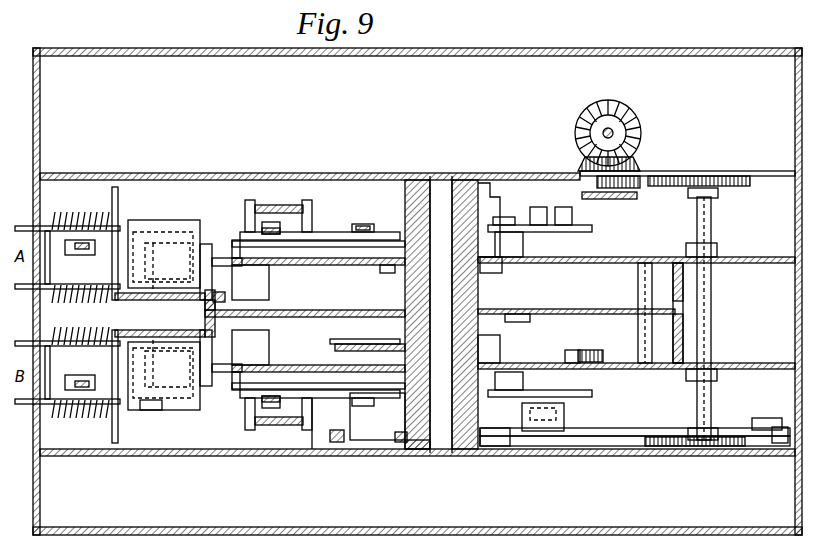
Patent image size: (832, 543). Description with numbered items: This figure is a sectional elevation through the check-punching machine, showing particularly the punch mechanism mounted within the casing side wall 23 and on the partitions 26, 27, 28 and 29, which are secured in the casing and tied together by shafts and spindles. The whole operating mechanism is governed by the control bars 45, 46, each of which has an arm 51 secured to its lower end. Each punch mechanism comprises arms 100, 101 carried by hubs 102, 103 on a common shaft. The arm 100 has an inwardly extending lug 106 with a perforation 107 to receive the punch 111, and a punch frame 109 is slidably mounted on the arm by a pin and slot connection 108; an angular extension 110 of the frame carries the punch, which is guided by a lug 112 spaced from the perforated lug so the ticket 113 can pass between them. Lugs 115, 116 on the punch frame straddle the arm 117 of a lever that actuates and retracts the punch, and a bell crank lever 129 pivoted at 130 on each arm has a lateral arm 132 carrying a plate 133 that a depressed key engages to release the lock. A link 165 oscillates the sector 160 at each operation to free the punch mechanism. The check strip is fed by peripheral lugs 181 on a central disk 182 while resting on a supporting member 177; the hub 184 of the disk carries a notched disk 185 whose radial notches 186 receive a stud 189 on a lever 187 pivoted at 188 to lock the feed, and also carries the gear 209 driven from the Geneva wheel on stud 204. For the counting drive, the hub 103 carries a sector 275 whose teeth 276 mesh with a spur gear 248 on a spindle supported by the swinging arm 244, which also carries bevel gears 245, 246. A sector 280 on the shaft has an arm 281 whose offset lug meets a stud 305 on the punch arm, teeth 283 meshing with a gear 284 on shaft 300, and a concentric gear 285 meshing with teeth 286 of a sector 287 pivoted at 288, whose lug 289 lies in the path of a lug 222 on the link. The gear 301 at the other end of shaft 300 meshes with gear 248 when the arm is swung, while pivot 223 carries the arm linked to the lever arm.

The side wall 23 is at (700, 48).
The partition 26 is at (255, 173).
The partition 27 is at (630, 257).
The partition 28 is at (745, 363).
The partition 29 is at (132, 457).
The control bar 45 is at (100, 392).
The control bar 46 is at (100, 240).
The arm 51 is at (70, 222).
The arm 100 is at (272, 425).
The arm 101 is at (300, 244).
The hub 102 is at (373, 419).
The hub 103 is at (480, 206).
The lug 106 is at (269, 282).
The perforation 107 is at (216, 256).
The pin and slot connection 108 is at (378, 238).
The punch frame 109 is at (340, 240).
The angular extension 110 is at (148, 410).
The punch 111 is at (150, 248).
The lug 112 is at (168, 248).
The ticket 113 is at (204, 312).
The lug 115 is at (276, 175).
The lug 116 is at (322, 175).
The arm 117 is at (300, 175).
The bell crank lever 129 is at (306, 232).
The pivot 130 is at (272, 311).
The arm 132 is at (218, 173).
The plate 133 is at (182, 173).
The sector 160 is at (510, 266).
The link 165 is at (560, 233).
The supporting member 177 is at (684, 338).
The peripheral lug 181 is at (225, 297).
The central disk 182 is at (582, 309).
The hub 184 is at (410, 292).
The disk 185 is at (360, 344).
The radial notch 186 is at (358, 332).
The lever 187 is at (572, 350).
The pivot 188 is at (608, 338).
The stud 189 is at (490, 342).
The stud 204 is at (463, 173).
The gear 209 is at (380, 270).
The lug 222 is at (540, 206).
The pivot 223 is at (574, 200).
The arm 244 is at (614, 130).
The bevel gear 245 is at (612, 100).
The bevel gear 246 is at (640, 162).
The spur gear 248 is at (650, 176).
The sector 275 is at (514, 173).
The teeth 276 is at (605, 200).
The sector 280 is at (612, 448).
The arm 281 is at (370, 456).
The teeth 283 is at (570, 447).
The gear 284 is at (734, 448).
The gear 285 is at (422, 456).
The teeth 286 is at (498, 447).
The sector 287 is at (635, 417).
The pivot 288 is at (770, 418).
The lug 289 is at (547, 433).
The shaft 300 is at (712, 224).
The gear 301 is at (730, 171).
The stud 305 is at (312, 456).